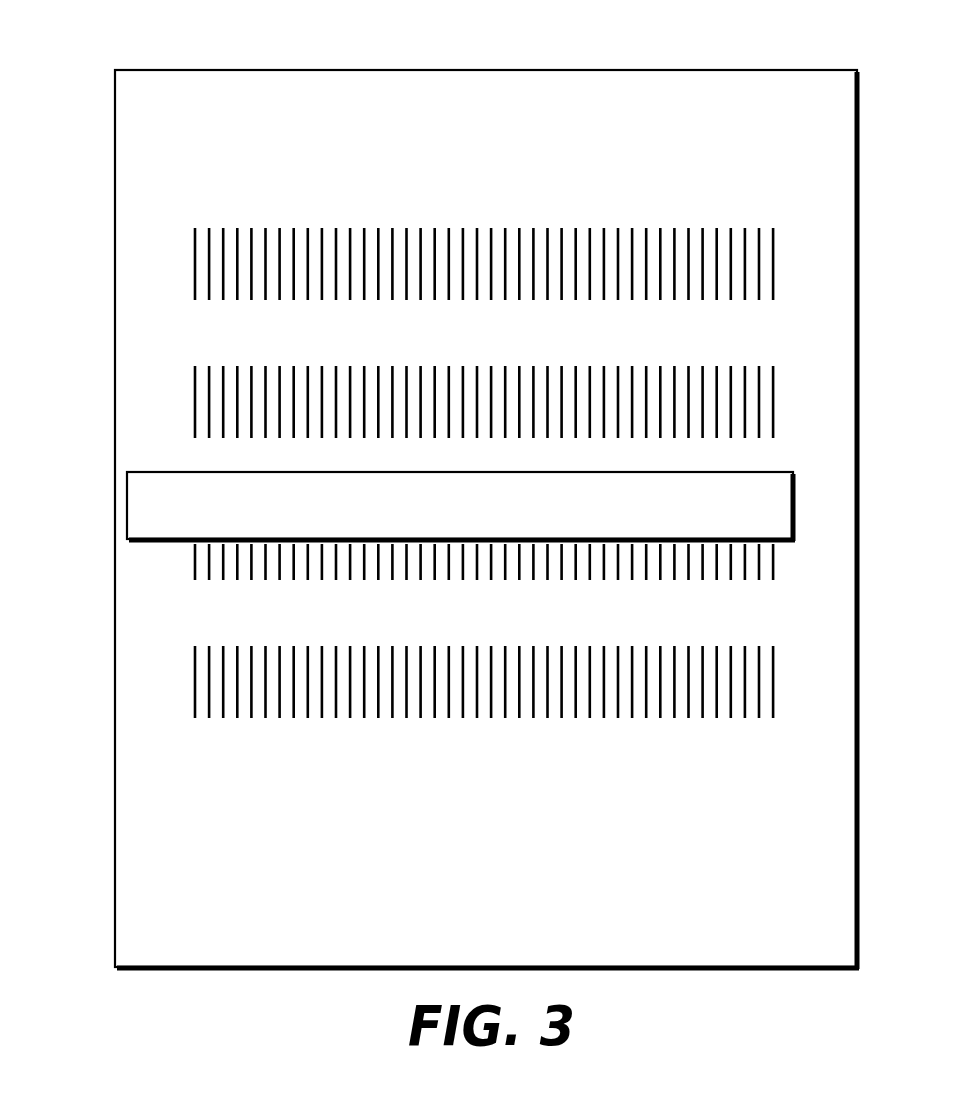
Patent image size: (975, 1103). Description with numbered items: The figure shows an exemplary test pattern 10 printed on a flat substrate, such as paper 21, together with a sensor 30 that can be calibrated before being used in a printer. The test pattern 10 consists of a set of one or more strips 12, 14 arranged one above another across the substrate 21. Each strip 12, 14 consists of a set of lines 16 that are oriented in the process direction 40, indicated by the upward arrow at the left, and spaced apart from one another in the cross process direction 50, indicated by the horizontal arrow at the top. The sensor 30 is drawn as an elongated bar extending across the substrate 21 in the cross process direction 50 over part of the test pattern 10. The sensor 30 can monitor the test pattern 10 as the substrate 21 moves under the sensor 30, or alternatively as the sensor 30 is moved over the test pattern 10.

The test pattern 10 is at (526, 455).
The strip 12 is at (800, 260).
The strip 14 is at (802, 403).
The lines 16 is at (661, 703).
The paper 21 is at (775, 70).
The sensor 30 is at (797, 503).
The process direction 40 is at (67, 592).
The cross process direction 50 is at (375, 37).